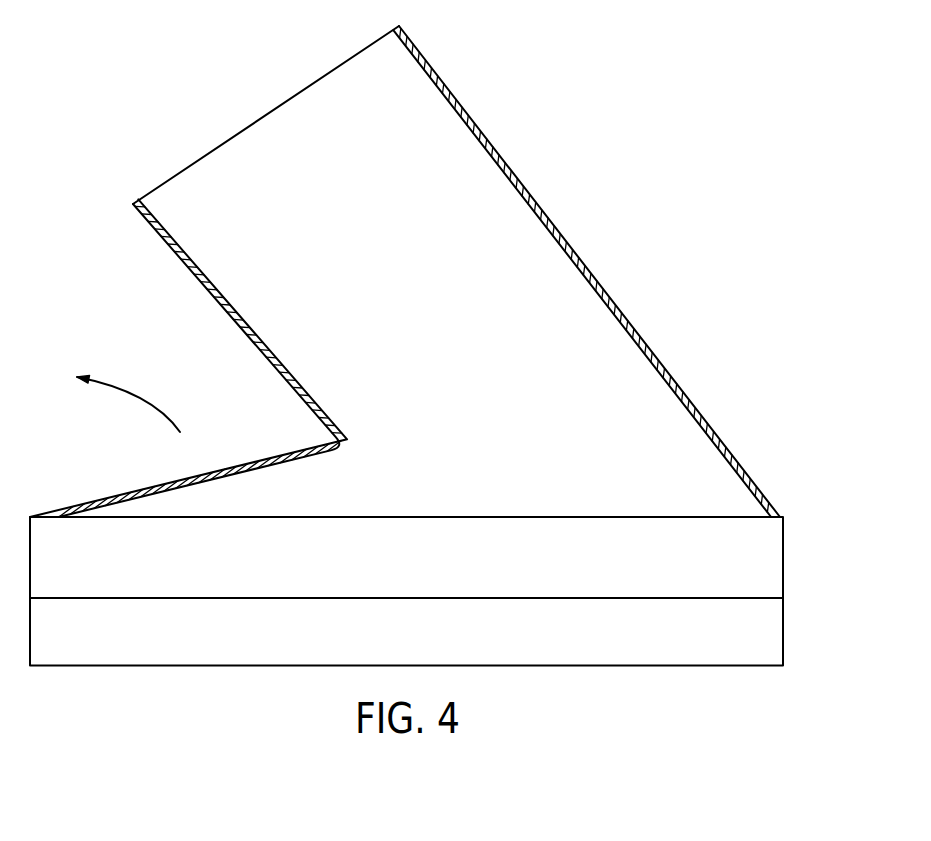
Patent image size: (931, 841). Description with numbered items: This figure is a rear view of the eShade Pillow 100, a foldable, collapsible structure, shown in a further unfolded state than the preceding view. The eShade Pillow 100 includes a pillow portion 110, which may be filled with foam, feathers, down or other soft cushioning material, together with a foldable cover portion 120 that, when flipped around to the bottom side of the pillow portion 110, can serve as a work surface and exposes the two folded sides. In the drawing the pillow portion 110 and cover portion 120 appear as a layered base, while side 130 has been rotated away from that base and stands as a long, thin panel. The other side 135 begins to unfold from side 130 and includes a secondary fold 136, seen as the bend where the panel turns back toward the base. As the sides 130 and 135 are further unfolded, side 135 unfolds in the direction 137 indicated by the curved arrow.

The eShade Pillow 100 is at (692, 160).
The pillow portion 110 is at (740, 565).
The cover portion 120 is at (723, 657).
The side 130 is at (505, 163).
The side 135 is at (219, 293).
The secondary fold 136 is at (340, 440).
The direction 137 is at (140, 398).